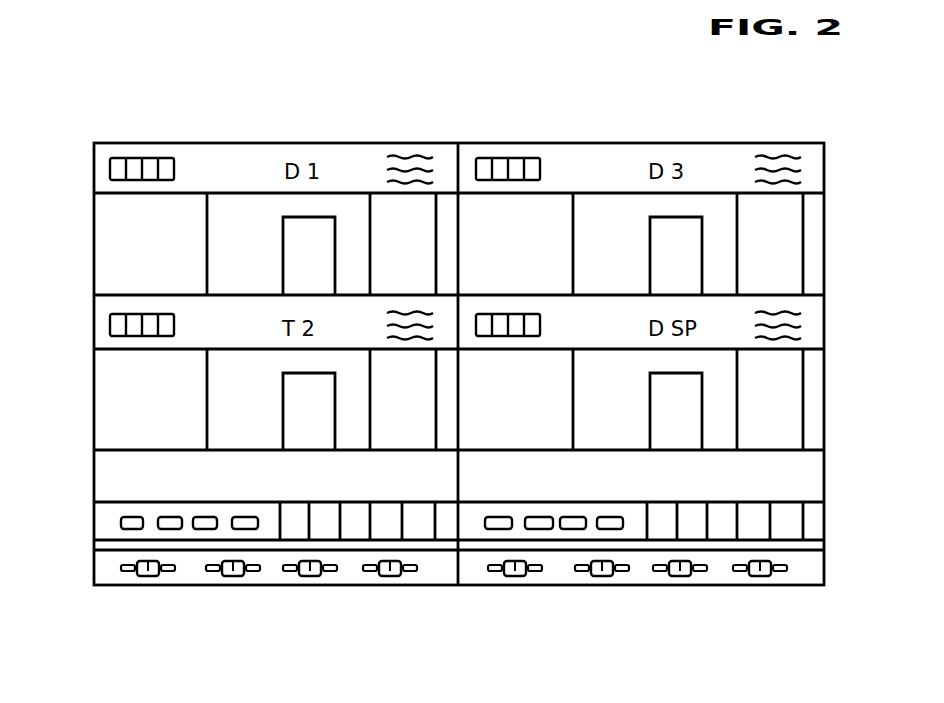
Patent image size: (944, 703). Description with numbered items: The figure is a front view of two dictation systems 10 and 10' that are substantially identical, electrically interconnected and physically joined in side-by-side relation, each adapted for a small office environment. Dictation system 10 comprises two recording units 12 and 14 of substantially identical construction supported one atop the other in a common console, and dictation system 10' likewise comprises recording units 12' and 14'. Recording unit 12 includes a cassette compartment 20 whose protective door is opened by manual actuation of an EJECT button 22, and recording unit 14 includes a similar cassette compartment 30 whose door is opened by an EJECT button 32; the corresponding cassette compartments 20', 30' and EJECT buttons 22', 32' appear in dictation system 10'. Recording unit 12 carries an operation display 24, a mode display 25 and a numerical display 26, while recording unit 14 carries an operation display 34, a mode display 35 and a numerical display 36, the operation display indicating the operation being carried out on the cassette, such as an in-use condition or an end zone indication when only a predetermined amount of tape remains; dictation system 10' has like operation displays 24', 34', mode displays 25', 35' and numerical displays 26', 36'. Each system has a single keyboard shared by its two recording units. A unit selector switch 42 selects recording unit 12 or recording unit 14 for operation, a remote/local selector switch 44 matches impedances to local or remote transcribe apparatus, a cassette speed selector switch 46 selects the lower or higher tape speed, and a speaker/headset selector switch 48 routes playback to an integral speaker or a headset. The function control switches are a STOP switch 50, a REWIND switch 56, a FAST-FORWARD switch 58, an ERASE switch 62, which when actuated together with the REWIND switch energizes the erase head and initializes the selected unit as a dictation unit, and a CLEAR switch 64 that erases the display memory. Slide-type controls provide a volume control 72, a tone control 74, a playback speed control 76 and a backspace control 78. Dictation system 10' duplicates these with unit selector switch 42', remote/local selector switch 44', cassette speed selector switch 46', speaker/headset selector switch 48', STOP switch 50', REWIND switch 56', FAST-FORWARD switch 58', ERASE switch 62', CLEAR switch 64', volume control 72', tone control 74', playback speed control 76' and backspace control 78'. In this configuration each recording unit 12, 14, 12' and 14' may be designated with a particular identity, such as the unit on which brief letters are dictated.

The dictation system 10 is at (79, 91).
The dictation system 10' is at (562, 83).
The recording unit 12 is at (238, 244).
The recording unit 12' is at (641, 178).
The recording unit 14 is at (236, 399).
The recording unit 14' is at (641, 340).
The cassette compartment 20 is at (278, 256).
The cassette compartment 20' is at (645, 253).
The EJECT button 22 is at (385, 195).
The EJECT button 22' is at (811, 244).
The operation display 24 is at (408, 125).
The operation display 24' is at (801, 131).
The mode display 25 is at (298, 109).
The mode display 25' is at (697, 121).
The numerical display 26 is at (163, 124).
The numerical display 26' is at (501, 135).
The cassette compartment 30 is at (279, 411).
The cassette compartment 30' is at (647, 411).
The EJECT button 32 is at (437, 399).
The EJECT button 32' is at (811, 399).
The operation display 34 is at (410, 293).
The operation display 34' is at (821, 330).
The mode display 35 is at (261, 322).
The mode display 35' is at (630, 281).
The numerical display 36 is at (95, 316).
The numerical display 36' is at (503, 297).
The unit selector switch 42 is at (241, 495).
The unit selector switch 42' is at (617, 494).
The remote/local selector switch 44 is at (198, 495).
The remote/local selector switch 44' is at (566, 494).
The cassette speed selector switch 46 is at (157, 495).
The cassette speed selector switch 46' is at (514, 494).
The speaker/headset selector switch 48 is at (85, 505).
The speaker/headset selector switch 48' is at (474, 575).
The STOP switch 50 is at (290, 501).
The STOP switch 50' is at (650, 567).
The REWIND switch 56 is at (324, 501).
The REWIND switch 56' is at (683, 500).
The FAST-FORWARD switch 58 is at (359, 501).
The FAST-FORWARD switch 58' is at (720, 567).
The ERASE switch 62 is at (392, 501).
The ERASE switch 62' is at (743, 500).
The CLEAR switch 64 is at (425, 501).
The CLEAR switch 64' is at (829, 499).
The volume control 72 is at (139, 597).
The volume control 72' is at (510, 616).
The tone control 74 is at (228, 597).
The tone control 74' is at (594, 616).
The playback speed control 76 is at (305, 597).
The playback speed control 76' is at (678, 616).
The backspace control 78 is at (387, 597).
The backspace control 78' is at (758, 616).